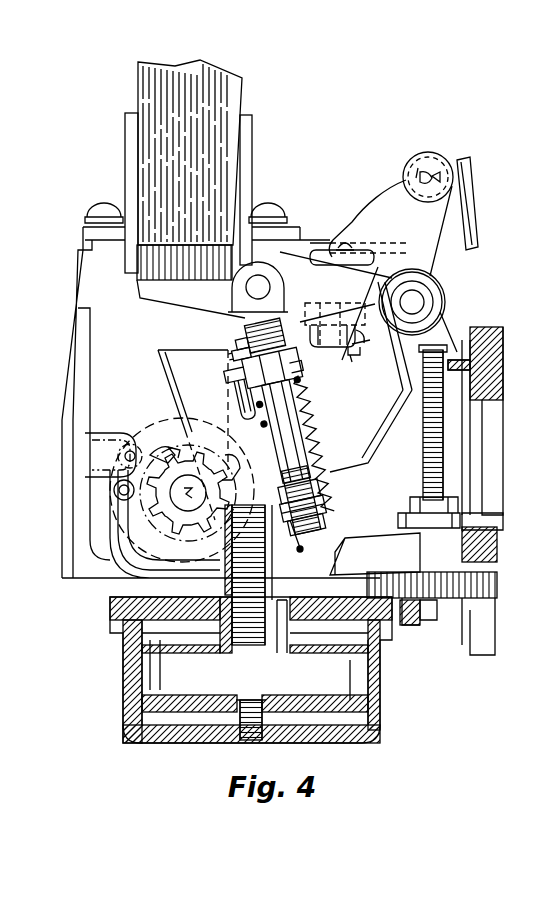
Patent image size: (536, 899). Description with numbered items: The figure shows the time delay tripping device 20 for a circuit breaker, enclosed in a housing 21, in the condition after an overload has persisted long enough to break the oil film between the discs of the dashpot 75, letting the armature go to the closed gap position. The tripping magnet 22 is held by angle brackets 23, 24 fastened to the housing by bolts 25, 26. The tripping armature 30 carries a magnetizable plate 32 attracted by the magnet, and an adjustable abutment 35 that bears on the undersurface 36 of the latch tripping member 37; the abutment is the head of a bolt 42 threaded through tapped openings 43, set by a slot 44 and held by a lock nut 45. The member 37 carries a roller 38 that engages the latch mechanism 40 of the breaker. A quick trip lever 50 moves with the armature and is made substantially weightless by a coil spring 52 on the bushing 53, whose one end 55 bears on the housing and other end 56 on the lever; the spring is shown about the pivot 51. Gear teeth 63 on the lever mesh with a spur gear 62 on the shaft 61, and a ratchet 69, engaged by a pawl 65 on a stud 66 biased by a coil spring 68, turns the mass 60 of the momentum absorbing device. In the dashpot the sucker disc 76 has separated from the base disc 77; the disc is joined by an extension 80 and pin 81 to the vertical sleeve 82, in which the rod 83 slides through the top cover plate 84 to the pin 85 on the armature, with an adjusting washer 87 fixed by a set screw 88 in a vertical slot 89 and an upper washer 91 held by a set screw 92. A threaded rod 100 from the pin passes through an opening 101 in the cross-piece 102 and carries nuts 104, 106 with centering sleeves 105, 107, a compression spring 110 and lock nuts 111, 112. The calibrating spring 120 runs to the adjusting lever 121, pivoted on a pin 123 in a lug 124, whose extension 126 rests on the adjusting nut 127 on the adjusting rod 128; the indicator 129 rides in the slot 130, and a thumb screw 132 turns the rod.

The tripping device 20 is at (41, 372).
The housing 21 is at (103, 424).
The tripping magnet 22 is at (180, 73).
The angle bracket 23 is at (125, 150).
The angle bracket 24 is at (252, 152).
The bolt 25 is at (112, 208).
The bolt 26 is at (264, 212).
The tripping armature 30 is at (336, 287).
The plate 32 is at (137, 262).
The adjustable abutment 35 is at (324, 247).
The undersurface 36 is at (347, 244).
The latch tripping member 37 is at (393, 285).
The roller 38 is at (410, 160).
The latch mechanism 40 is at (476, 197).
The bolt 42 is at (322, 296).
The tapped openings 43 is at (332, 326).
The slot 44 is at (356, 353).
The lock nut 45 is at (364, 341).
The quick trip lever 50 is at (193, 435).
The pivot pin 51 is at (412, 302).
The coil spring 52 is at (428, 284).
The bushing 53 is at (443, 296).
The end of coil spring 55 is at (470, 330).
The end of coil spring 56 is at (410, 385).
The mass 60 is at (172, 427).
The shaft 61 is at (188, 493).
The spur gear 62 is at (188, 493).
The gear teeth 63 is at (235, 467).
The pawl 65 is at (162, 447).
The stud 66 is at (129, 499).
The coil spring 68 is at (114, 489).
The ratchet 69 is at (174, 447).
The dashpot 75 is at (383, 670).
The sucker disc 76 is at (318, 655).
The disc 77 is at (296, 697).
The extension 80 is at (264, 654).
The pin 81 is at (256, 650).
The vertical sleeve 82 is at (220, 632).
The rod 83 is at (248, 575).
The top cover plate 84 is at (254, 371).
The pin 85 is at (258, 287).
The adjusting washer 87 is at (224, 542).
The set screw 88 is at (301, 552).
The vertical slot 89 is at (288, 634).
The adjustable washer 91 is at (229, 336).
The set screw 92 is at (229, 347).
The threaded rod 100 is at (325, 450).
The opening 101 is at (253, 403).
The cross-piece 102 is at (321, 377).
The adjustable nut 104 is at (317, 361).
The spring centering sleeve 105 is at (336, 439).
The adjustable nut 106 is at (327, 503).
The spring centering sleeve 107 is at (323, 486).
The compression spring 110 is at (306, 399).
The lock nut 111 is at (330, 519).
The lock nut 112 is at (274, 326).
The calibrating spring 120 is at (314, 421).
The adjusting lever 121 is at (375, 554).
The pin 123 is at (128, 444).
The lug 124 is at (110, 455).
The extension 126 is at (418, 575).
The adjusting nut 127 is at (398, 528).
The adjusting rod 128 is at (423, 438).
The indicator 129 is at (492, 516).
The slot 130 is at (475, 421).
The thumb screw 132 is at (404, 625).